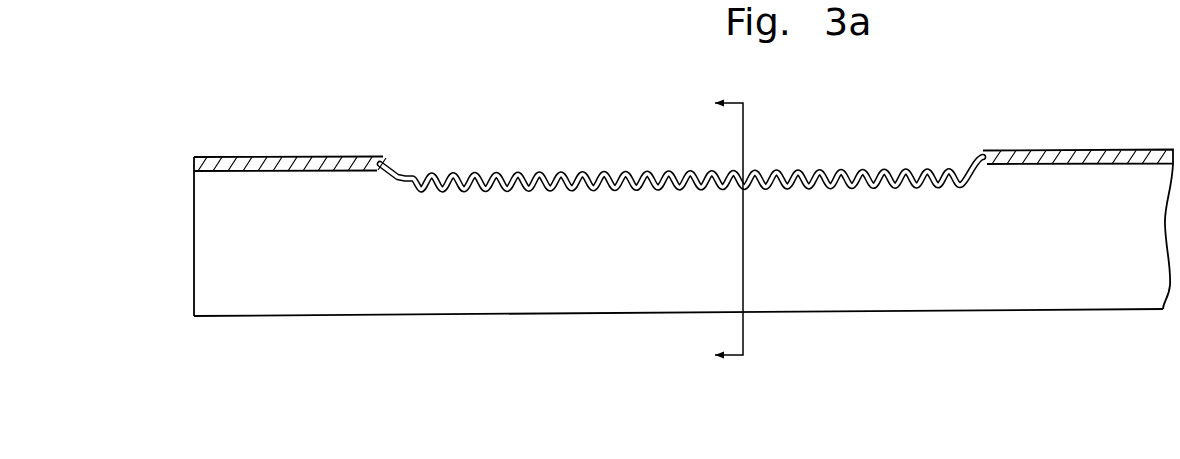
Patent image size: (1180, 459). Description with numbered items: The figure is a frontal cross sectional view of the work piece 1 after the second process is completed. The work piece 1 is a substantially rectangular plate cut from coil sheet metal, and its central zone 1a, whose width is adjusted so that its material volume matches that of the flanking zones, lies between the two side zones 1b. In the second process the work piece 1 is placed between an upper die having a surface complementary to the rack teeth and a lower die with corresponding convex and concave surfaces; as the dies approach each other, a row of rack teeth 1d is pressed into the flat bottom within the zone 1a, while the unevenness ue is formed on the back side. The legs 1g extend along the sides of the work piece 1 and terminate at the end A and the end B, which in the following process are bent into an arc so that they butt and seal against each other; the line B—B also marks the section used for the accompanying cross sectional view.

The work piece 1 is at (613, 70).
The zone for forming the rack teeth 1a is at (783, 158).
The zone on both sides 1b is at (300, 130).
The row of rack teeth 1d is at (822, 170).
The legs 1g is at (1112, 298).
The unevenness ue is at (838, 197).
The end A is at (870, 311).
The end B is at (252, 362).